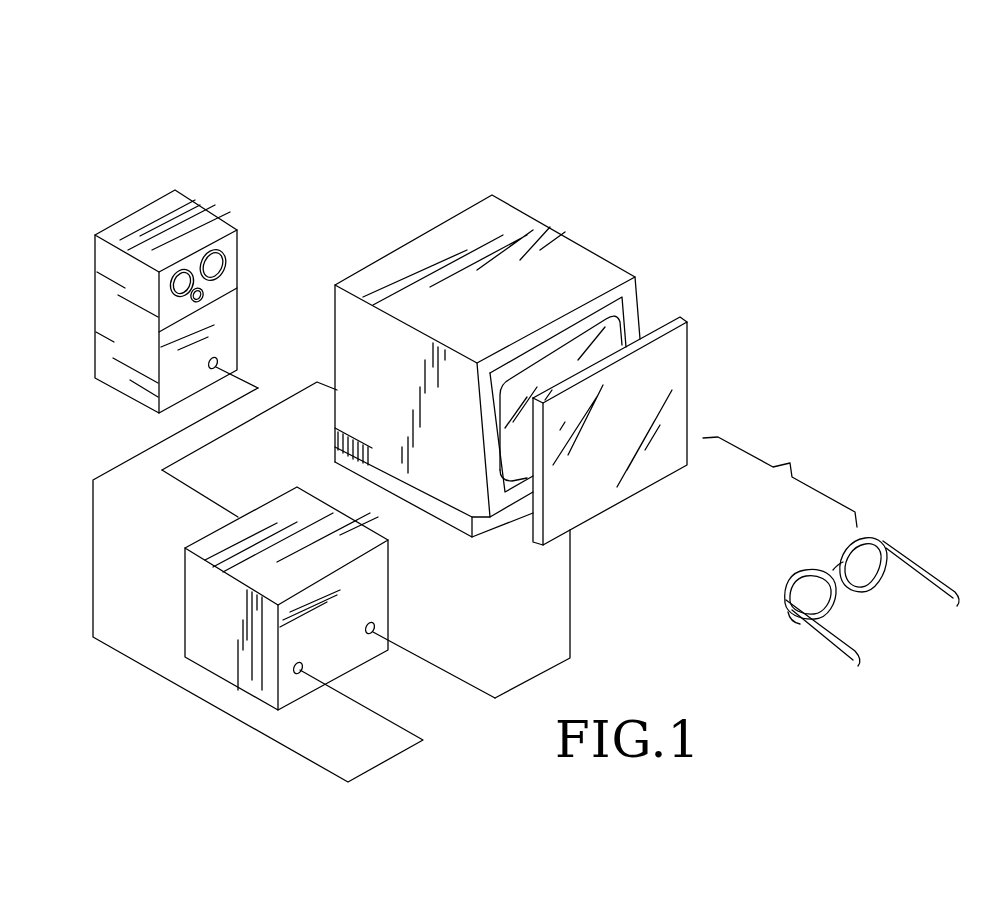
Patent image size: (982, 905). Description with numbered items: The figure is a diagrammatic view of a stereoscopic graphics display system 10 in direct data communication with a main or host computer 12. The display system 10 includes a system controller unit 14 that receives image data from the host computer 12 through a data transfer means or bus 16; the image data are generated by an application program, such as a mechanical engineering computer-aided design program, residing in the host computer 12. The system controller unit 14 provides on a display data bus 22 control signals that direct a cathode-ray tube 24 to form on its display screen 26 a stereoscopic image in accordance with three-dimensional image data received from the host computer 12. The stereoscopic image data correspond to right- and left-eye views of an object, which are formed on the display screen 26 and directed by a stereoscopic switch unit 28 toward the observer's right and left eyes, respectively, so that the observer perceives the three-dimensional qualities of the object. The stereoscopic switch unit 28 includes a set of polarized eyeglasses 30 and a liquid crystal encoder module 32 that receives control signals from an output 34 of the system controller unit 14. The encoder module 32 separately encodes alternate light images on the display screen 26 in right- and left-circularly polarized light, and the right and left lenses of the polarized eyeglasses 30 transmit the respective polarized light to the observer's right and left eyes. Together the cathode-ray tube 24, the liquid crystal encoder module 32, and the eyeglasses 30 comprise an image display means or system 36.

The stereoscopic graphics display system 10 is at (700, 277).
The host computer 12 is at (218, 213).
The system controller unit 14 is at (367, 590).
The data transfer bus 16 is at (130, 655).
The display data bus 22 is at (208, 443).
The cathode-ray tube 24 is at (427, 248).
The display screen 26 is at (565, 345).
The stereoscopic switch unit 28 is at (780, 479).
The polarized eyeglasses 30 is at (798, 583).
The liquid crystal encoder module 32 is at (683, 355).
The output of system controller unit 34 is at (465, 685).
The image display system 36 is at (840, 443).